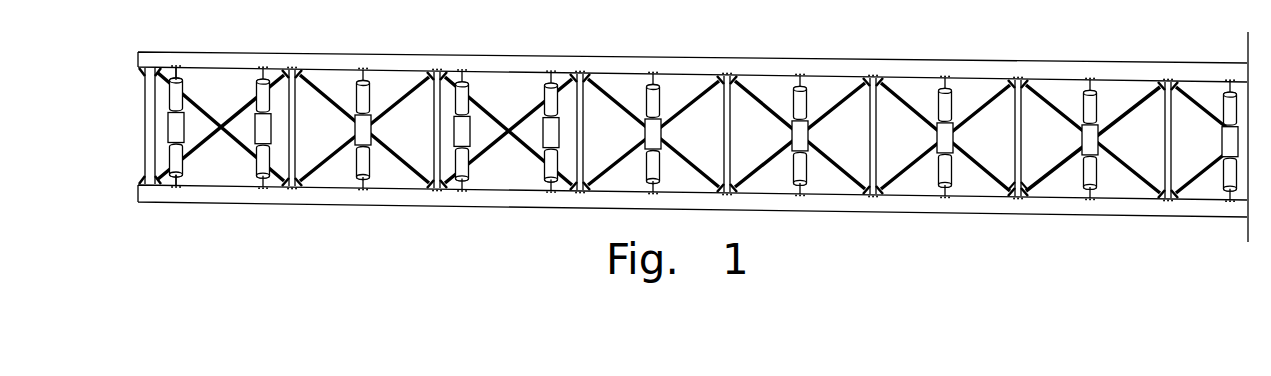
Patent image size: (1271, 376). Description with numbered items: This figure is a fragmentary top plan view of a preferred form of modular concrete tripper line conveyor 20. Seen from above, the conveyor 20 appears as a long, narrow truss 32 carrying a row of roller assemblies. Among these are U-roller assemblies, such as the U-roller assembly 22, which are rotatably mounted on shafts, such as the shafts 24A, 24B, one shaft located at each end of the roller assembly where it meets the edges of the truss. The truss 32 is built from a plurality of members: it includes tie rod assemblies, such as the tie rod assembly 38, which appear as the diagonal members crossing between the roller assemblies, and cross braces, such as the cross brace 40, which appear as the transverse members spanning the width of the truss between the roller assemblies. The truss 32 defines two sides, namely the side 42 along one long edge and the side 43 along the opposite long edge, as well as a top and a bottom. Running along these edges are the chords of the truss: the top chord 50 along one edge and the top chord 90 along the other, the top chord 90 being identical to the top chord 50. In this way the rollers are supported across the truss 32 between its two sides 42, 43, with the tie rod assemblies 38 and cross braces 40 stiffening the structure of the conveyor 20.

The modular concrete tripper line conveyor 20 is at (962, 221).
The U-roller assembly 22 is at (170, 142).
The shaft 24A is at (181, 80).
The shaft 24B is at (184, 182).
The truss 32 is at (1011, 188).
The tie rod assembly 38 is at (533, 92).
The cross brace 40 is at (142, 130).
The side 42 is at (584, 57).
The side 43 is at (510, 208).
The top chord 50 is at (1167, 222).
The top chord 90 is at (760, 54).